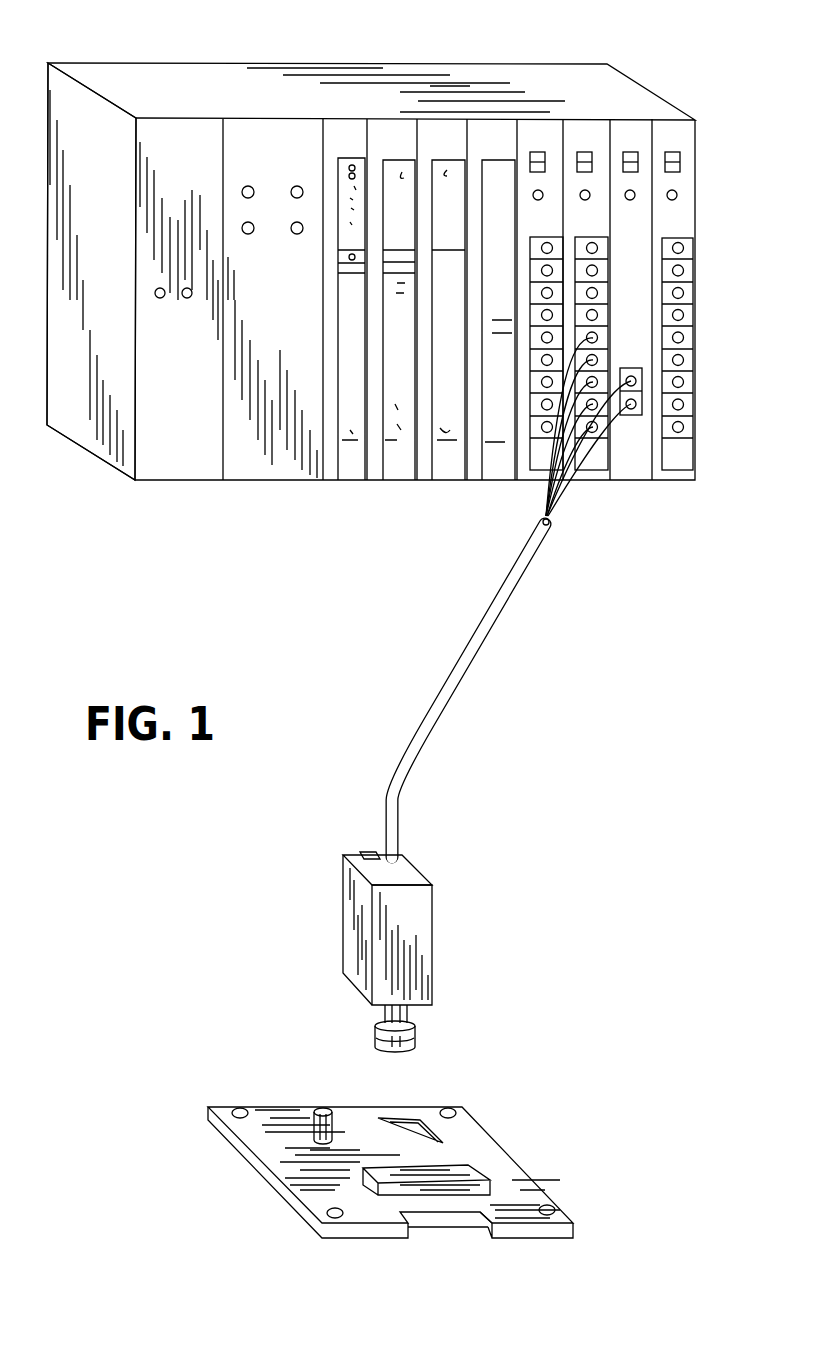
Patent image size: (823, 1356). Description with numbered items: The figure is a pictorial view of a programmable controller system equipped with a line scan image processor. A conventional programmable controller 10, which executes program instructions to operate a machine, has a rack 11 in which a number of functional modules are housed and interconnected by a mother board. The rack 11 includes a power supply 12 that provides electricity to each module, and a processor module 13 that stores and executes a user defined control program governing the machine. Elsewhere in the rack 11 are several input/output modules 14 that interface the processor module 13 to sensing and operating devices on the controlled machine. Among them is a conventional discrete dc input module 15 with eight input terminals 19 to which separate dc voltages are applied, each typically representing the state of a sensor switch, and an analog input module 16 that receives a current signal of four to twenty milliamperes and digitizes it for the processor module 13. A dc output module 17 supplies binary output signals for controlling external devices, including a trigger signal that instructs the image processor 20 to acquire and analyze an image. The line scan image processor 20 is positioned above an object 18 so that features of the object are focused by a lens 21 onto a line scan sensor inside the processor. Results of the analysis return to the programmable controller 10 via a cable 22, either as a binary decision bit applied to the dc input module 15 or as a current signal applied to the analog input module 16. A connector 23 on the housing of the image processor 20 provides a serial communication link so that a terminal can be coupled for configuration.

The programmable controller 10 is at (302, 62).
The rack 11 is at (67, 432).
The power supply 12 is at (172, 472).
The processor module 13 is at (272, 472).
The input/output module 14 is at (347, 481).
The discrete dc input module 15 is at (593, 468).
The analog input module 16 is at (642, 457).
The dc output module 17 is at (538, 483).
The object 18 is at (485, 1145).
The input terminals 19 is at (598, 432).
The line scan image processor 20 is at (425, 902).
The lens 21 is at (415, 1025).
The cable 22 is at (463, 670).
The connector 23 is at (365, 851).